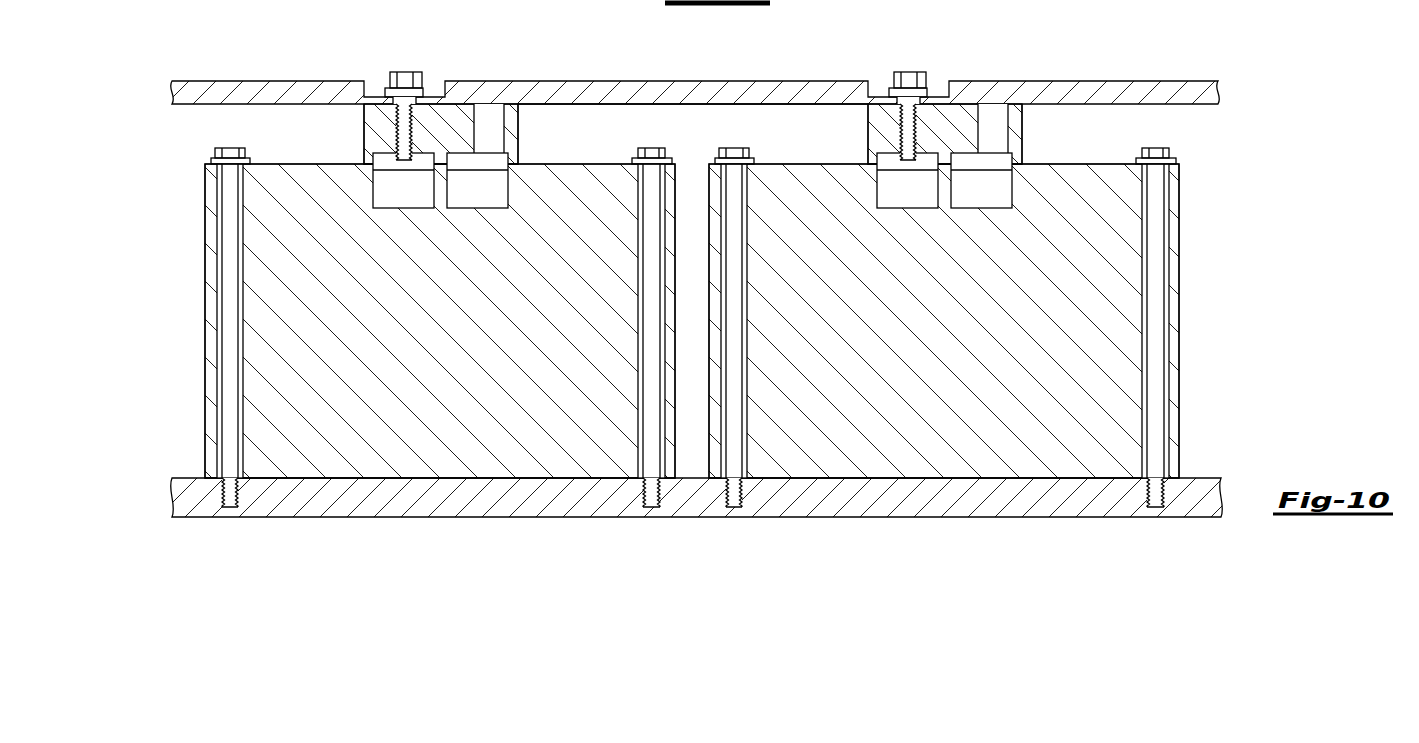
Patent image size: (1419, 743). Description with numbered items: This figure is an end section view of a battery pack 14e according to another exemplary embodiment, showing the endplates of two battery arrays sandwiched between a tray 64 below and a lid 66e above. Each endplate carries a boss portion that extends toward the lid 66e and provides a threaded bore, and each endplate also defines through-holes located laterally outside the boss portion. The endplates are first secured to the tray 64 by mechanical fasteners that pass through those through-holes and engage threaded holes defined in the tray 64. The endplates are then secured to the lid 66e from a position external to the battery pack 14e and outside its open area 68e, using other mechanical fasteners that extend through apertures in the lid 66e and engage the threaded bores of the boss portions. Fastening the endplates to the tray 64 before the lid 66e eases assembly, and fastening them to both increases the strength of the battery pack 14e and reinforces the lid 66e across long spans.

The battery pack 14e is at (729, 67).
The tray 64 is at (856, 507).
The lid 66e is at (683, 96).
The open area 68e is at (568, 131).